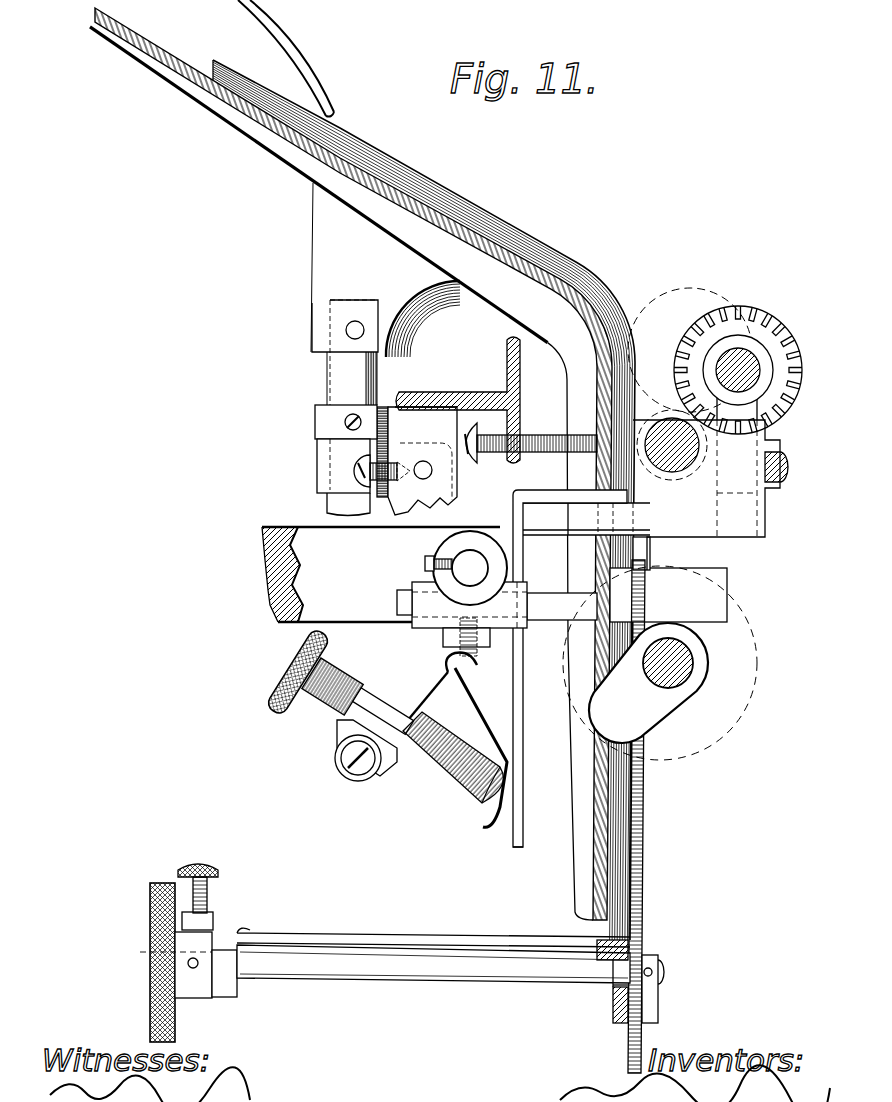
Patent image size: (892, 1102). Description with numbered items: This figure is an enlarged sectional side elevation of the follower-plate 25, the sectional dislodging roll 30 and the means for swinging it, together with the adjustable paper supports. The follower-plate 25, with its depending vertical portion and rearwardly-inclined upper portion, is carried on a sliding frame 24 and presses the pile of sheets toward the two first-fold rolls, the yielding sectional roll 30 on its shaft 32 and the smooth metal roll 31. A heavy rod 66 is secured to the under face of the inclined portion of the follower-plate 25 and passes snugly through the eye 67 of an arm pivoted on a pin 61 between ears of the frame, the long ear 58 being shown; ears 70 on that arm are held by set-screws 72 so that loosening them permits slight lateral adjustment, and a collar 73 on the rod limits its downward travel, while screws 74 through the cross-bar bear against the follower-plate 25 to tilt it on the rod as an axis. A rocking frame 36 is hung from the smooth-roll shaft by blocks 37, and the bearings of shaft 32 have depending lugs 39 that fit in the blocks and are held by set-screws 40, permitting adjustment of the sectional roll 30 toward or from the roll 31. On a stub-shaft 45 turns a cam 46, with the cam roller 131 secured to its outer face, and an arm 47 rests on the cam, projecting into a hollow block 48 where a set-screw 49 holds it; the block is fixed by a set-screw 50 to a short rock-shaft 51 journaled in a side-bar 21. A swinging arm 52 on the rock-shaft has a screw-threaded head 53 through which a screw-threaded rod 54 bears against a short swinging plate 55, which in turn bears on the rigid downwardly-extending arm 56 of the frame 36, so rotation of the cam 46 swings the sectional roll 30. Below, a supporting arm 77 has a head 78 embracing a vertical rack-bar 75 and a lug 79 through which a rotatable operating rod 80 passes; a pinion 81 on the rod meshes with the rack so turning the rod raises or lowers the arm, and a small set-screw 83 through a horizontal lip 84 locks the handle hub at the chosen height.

The side-bar 21 is at (302, 533).
The sliding frame 24 is at (440, 395).
The follower-plate 25 is at (273, 150).
The sectional roll 30 is at (778, 335).
The smooth roll 31 is at (678, 459).
The shaft of sectional roll 32 is at (757, 371).
The rocking frame 36 is at (763, 518).
The blocks 37 is at (703, 517).
The depending lugs 39 is at (737, 458).
The set-screws 40 is at (790, 466).
The stub-shaft 45 is at (690, 661).
The cam 46 is at (667, 706).
The arm 47 is at (557, 618).
The hollow block 48 is at (478, 651).
The set-screw 49 is at (466, 670).
The set-screw 50 is at (426, 562).
The short rock-shaft 51 is at (472, 555).
The swinging arm 52 is at (370, 683).
The screw-threaded head 53 is at (398, 733).
The screw-threaded rod 54 is at (443, 782).
The swinging plate 55 is at (478, 712).
The downwardly-extending arm 56 is at (524, 721).
The ear 58 is at (445, 414).
The pin 61 is at (433, 470).
The rod 66 is at (332, 371).
The eye 67 is at (318, 459).
The ears 70 is at (387, 450).
The set-screws 72 is at (352, 470).
The collar 73 is at (315, 416).
The screws 74 is at (535, 438).
The rack-bar 75 is at (645, 882).
The arm 77 is at (433, 938).
The head 78 is at (658, 950).
The lug 79 is at (237, 998).
The operating rod 80 is at (430, 980).
The pinion 81 is at (613, 986).
The set-screw 83 is at (208, 893).
The horizontal lip 84 is at (220, 915).
The cam roller 131 is at (720, 700).